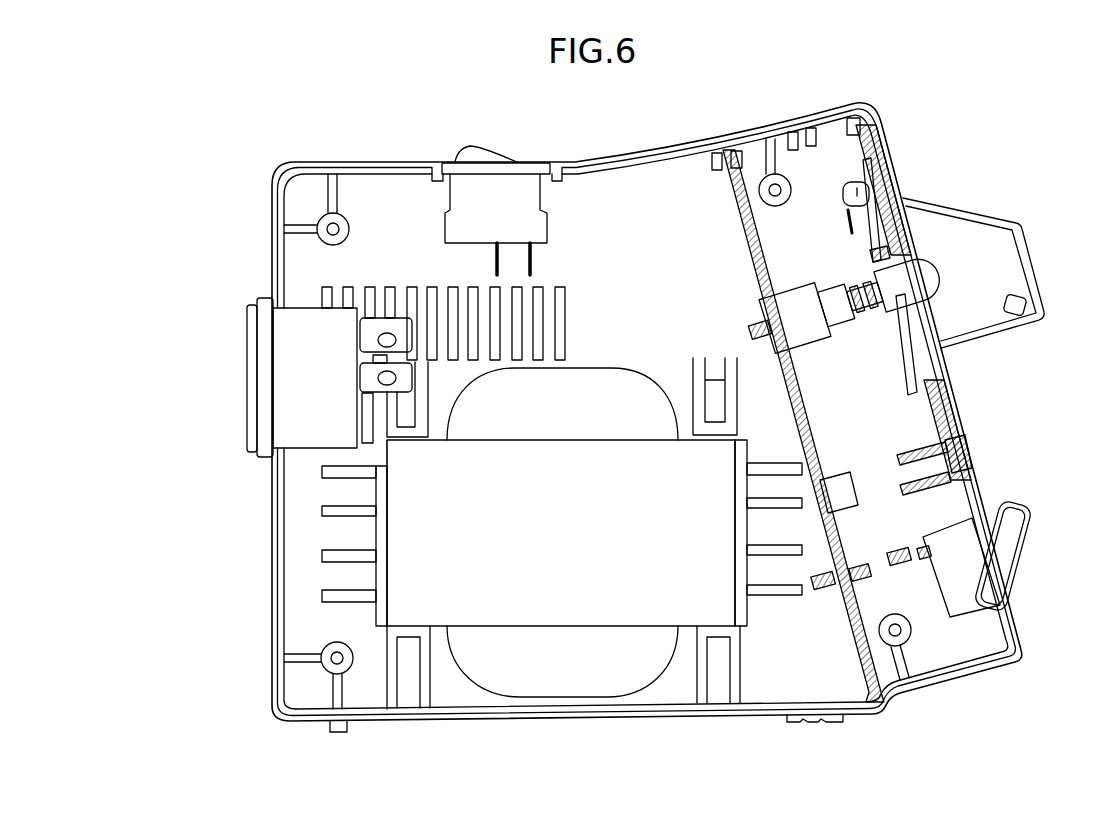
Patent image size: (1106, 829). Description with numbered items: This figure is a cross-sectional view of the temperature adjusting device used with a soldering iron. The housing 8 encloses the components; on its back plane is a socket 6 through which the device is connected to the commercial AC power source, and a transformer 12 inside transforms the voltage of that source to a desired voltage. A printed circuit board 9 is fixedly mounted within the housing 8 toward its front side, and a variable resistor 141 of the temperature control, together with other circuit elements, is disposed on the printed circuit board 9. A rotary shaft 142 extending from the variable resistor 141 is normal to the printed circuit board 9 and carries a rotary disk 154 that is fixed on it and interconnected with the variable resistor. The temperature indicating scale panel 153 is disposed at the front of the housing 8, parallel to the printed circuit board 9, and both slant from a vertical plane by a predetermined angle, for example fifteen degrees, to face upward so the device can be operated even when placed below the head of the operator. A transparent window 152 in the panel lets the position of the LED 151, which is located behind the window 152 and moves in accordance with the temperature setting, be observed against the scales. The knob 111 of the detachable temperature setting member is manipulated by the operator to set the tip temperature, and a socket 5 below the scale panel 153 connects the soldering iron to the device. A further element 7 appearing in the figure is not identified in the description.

The socket 5 is at (1020, 553).
The socket 6 is at (247, 355).
The switch 7 is at (462, 150).
The housing 8 is at (272, 205).
The printed circuit board 9 is at (733, 207).
The transformer 12 is at (507, 665).
The knob 111 is at (985, 262).
The variable resistor 141 is at (790, 306).
The rotary shaft 142 is at (872, 292).
The LED 151 is at (848, 191).
The transparent window 152 is at (893, 180).
The temperature indicating scale panel 153 is at (958, 392).
The rotary disk 154 is at (903, 372).